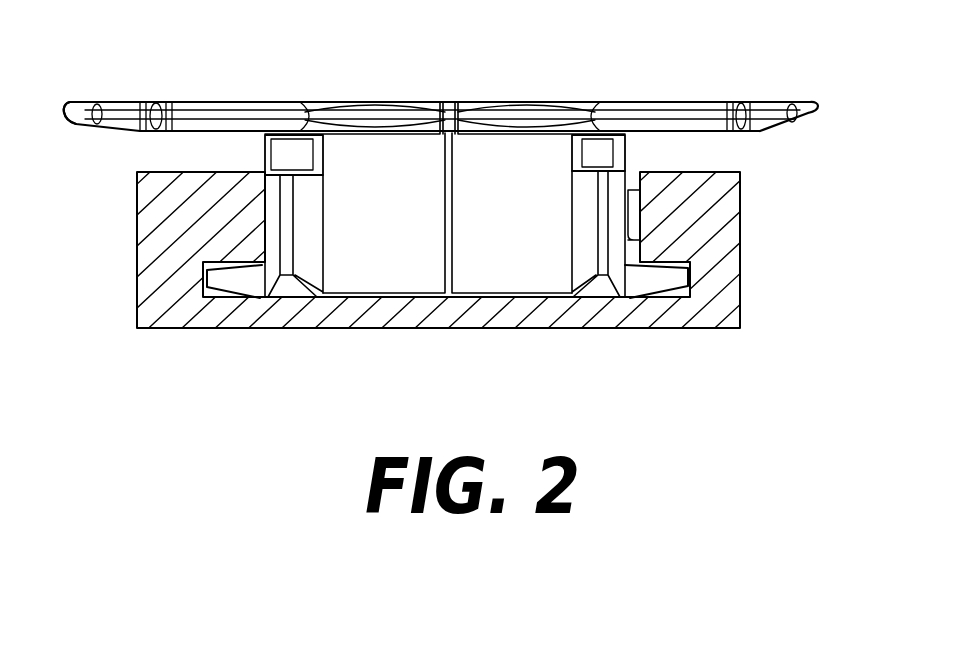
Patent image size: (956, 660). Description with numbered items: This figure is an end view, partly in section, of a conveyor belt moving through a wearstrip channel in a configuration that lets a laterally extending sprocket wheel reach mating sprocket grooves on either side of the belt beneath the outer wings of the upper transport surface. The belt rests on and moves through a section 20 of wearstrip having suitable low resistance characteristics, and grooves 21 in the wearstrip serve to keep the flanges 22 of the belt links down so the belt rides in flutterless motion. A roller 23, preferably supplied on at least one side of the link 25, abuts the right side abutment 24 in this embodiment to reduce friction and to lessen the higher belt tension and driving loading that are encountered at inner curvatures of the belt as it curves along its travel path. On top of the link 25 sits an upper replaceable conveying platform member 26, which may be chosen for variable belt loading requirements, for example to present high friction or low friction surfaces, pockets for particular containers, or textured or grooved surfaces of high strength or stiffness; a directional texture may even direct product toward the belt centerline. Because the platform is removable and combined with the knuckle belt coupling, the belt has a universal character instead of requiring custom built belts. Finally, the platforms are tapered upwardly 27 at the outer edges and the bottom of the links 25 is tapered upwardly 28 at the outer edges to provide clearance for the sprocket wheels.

The section of wearstrip 20 is at (693, 223).
The grooves 21 is at (712, 289).
The flanges 22 is at (652, 283).
The roller 23 is at (643, 226).
The right side abutment 24 is at (638, 173).
The link 25 is at (441, 108).
The replaceable conveying platform member 26 is at (214, 118).
The upward taper of platform 27 is at (97, 125).
The upward taper of link bottom 28 is at (228, 290).